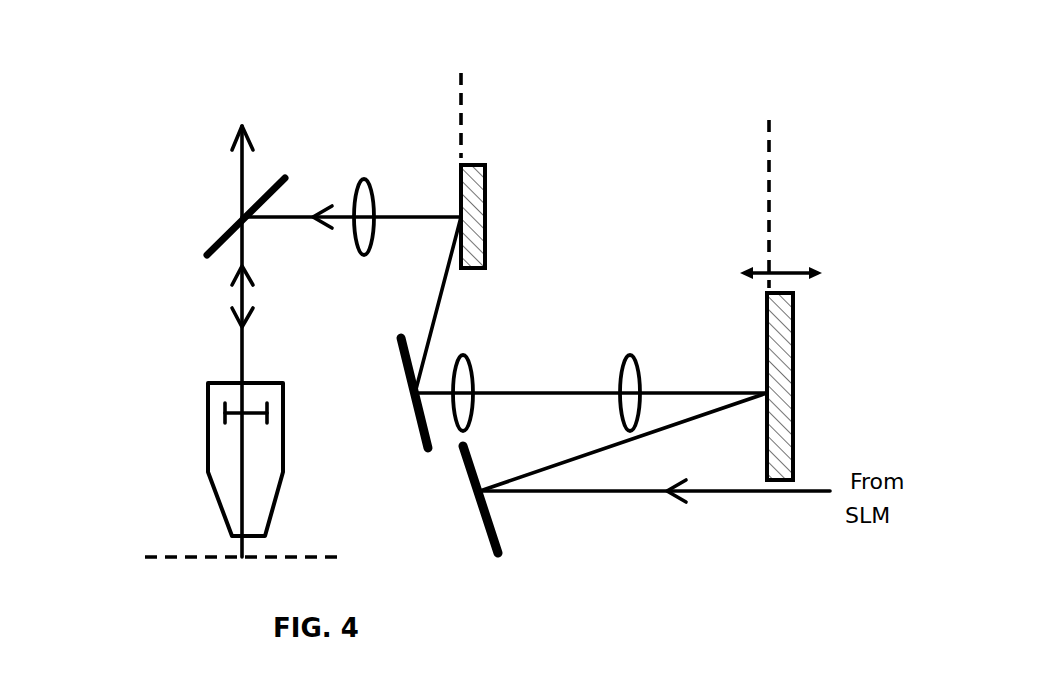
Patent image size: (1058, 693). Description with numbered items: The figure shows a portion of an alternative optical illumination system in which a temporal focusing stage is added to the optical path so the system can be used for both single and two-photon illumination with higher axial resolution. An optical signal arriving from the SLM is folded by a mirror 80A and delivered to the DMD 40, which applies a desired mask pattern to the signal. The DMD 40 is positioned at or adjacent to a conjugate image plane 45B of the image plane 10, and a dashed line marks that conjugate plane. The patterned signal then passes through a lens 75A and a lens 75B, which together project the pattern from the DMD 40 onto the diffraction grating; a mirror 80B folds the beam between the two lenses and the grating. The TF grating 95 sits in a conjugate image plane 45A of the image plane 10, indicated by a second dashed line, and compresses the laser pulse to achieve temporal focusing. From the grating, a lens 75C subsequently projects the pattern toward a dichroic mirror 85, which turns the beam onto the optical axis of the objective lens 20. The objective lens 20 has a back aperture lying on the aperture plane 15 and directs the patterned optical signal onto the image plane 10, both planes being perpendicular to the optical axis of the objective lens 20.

The image plane 10 is at (105, 585).
The aperture plane 15 is at (115, 447).
The objective lens 20 is at (285, 435).
The DMD 40 is at (795, 326).
The conjugate plane 45A is at (500, 133).
The conjugate image plane 45B is at (803, 210).
The lens 75A is at (640, 378).
The lens 75B is at (475, 380).
The lens 75C is at (375, 198).
The mirror 80A is at (482, 528).
The mirror 80B is at (400, 360).
The dichroic mirror 85 is at (210, 246).
The TF grating 95 is at (485, 258).